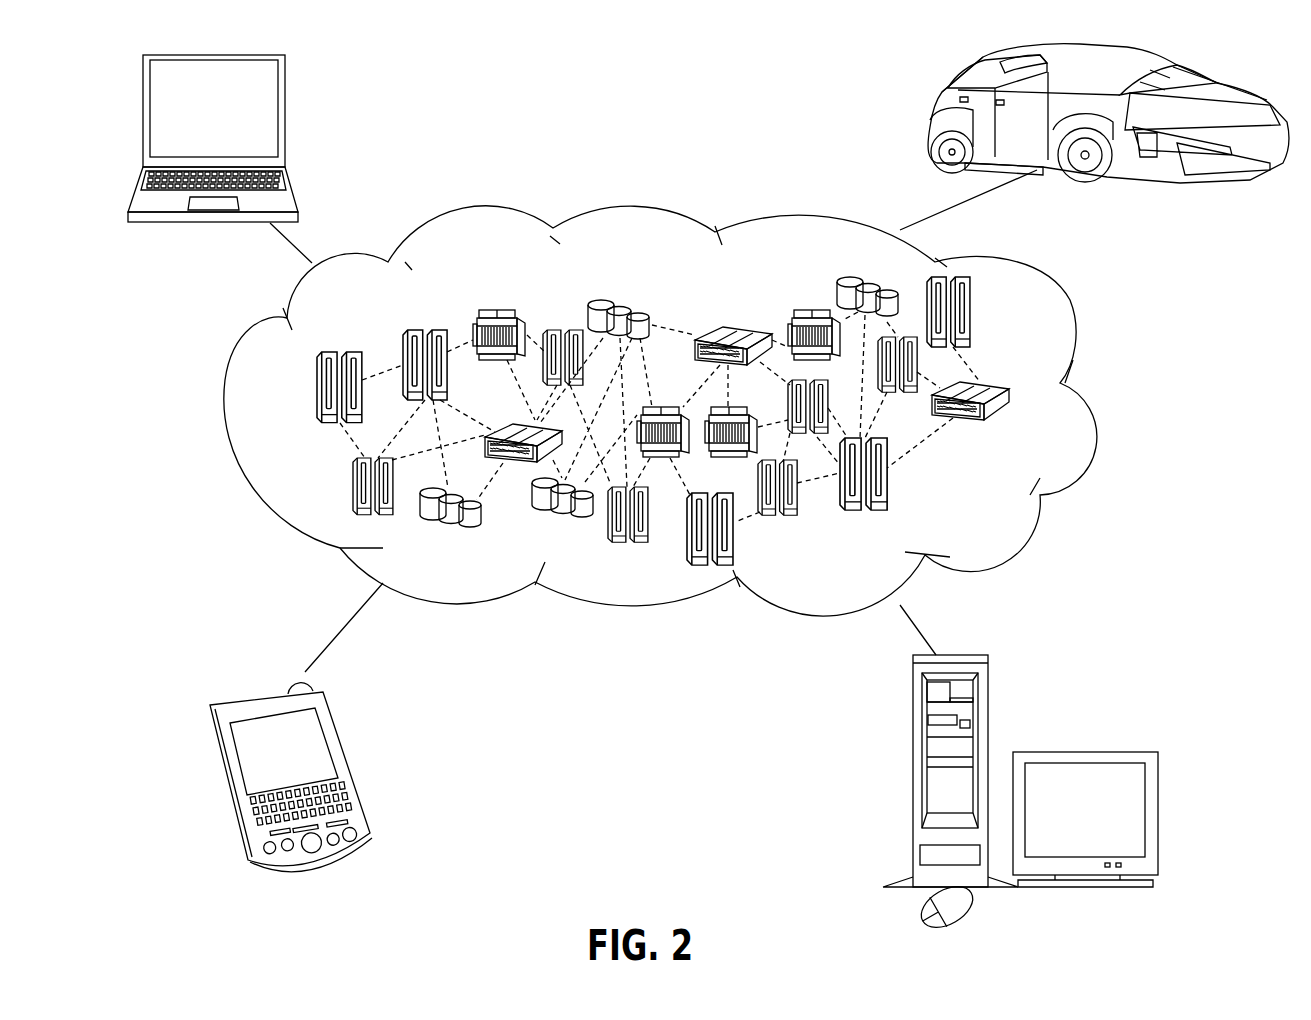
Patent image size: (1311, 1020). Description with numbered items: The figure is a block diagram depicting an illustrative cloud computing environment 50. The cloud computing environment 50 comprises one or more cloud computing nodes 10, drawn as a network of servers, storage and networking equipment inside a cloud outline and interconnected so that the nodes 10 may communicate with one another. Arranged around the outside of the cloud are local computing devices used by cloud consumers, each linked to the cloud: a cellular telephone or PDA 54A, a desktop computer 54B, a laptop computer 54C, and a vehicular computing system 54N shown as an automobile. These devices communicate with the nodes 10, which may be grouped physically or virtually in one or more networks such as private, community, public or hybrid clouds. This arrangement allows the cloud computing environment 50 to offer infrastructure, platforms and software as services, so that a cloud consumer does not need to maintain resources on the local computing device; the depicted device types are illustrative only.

The cloud computing node 10 is at (993, 504).
The cloud computing environment 50 is at (693, 411).
The cellular telephone or PDA 54A is at (340, 732).
The desktop computer 54B is at (912, 715).
The laptop computer 54C is at (285, 92).
The vehicular computing system 54N is at (930, 110).